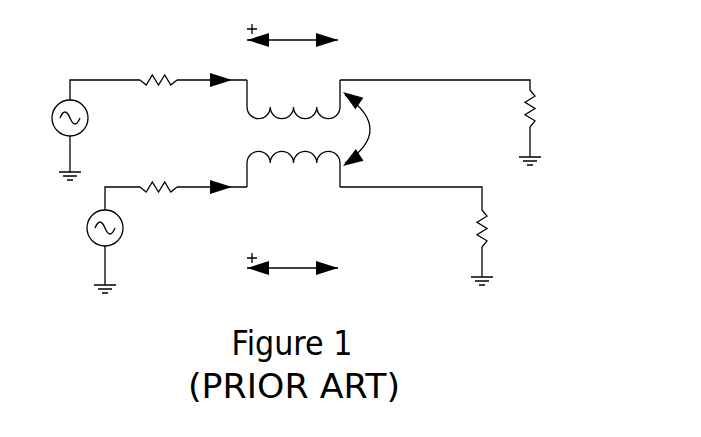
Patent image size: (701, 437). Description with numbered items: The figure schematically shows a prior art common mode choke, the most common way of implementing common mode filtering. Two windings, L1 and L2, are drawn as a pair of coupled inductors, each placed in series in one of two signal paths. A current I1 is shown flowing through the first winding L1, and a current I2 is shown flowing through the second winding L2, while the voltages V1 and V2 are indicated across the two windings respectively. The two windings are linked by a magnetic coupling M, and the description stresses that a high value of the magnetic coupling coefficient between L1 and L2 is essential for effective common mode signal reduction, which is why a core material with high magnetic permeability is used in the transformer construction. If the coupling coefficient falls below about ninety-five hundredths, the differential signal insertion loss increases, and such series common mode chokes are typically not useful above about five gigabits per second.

The current through first inductor I1 is at (217, 65).
The current through second inductor I2 is at (218, 171).
The first inductor winding L1 is at (293, 88).
The second inductor winding L2 is at (293, 182).
The voltage across first inductor V1 is at (292, 23).
The voltage across second inductor V2 is at (292, 251).
The mutual inductance M is at (371, 129).